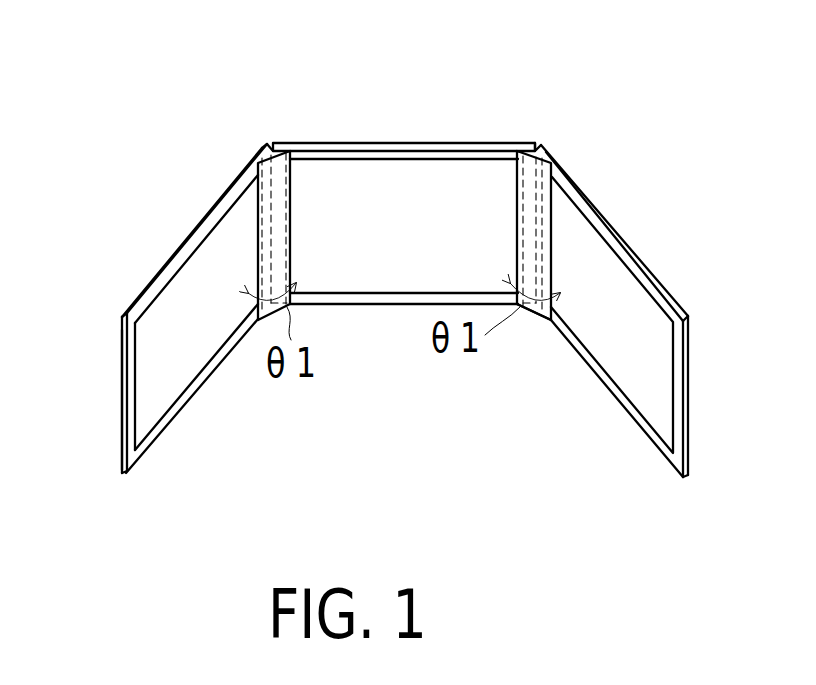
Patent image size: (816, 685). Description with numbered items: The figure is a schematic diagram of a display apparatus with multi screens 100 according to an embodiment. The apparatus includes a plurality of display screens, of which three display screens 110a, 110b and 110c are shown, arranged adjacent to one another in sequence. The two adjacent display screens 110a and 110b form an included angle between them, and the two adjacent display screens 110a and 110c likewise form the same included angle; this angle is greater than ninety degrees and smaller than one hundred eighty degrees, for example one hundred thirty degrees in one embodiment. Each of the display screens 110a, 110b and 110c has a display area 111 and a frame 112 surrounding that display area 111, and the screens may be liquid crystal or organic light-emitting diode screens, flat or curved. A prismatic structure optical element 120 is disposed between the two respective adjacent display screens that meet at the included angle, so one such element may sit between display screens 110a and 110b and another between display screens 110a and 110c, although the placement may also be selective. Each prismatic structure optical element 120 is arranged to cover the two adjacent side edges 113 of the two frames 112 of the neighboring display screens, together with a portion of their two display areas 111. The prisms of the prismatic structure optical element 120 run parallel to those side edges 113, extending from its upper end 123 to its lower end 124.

The display apparatus with multi screens 100 is at (94, 38).
The display screen 110a is at (400, 140).
The display screen 110b is at (152, 242).
The display screen 110c is at (655, 242).
The display area 111 is at (168, 377).
The frame 112 is at (122, 398).
The side edge 113 is at (260, 186).
The prismatic structure optical element 120 is at (552, 210).
The upper end 123 is at (536, 144).
The lower end 124 is at (533, 312).